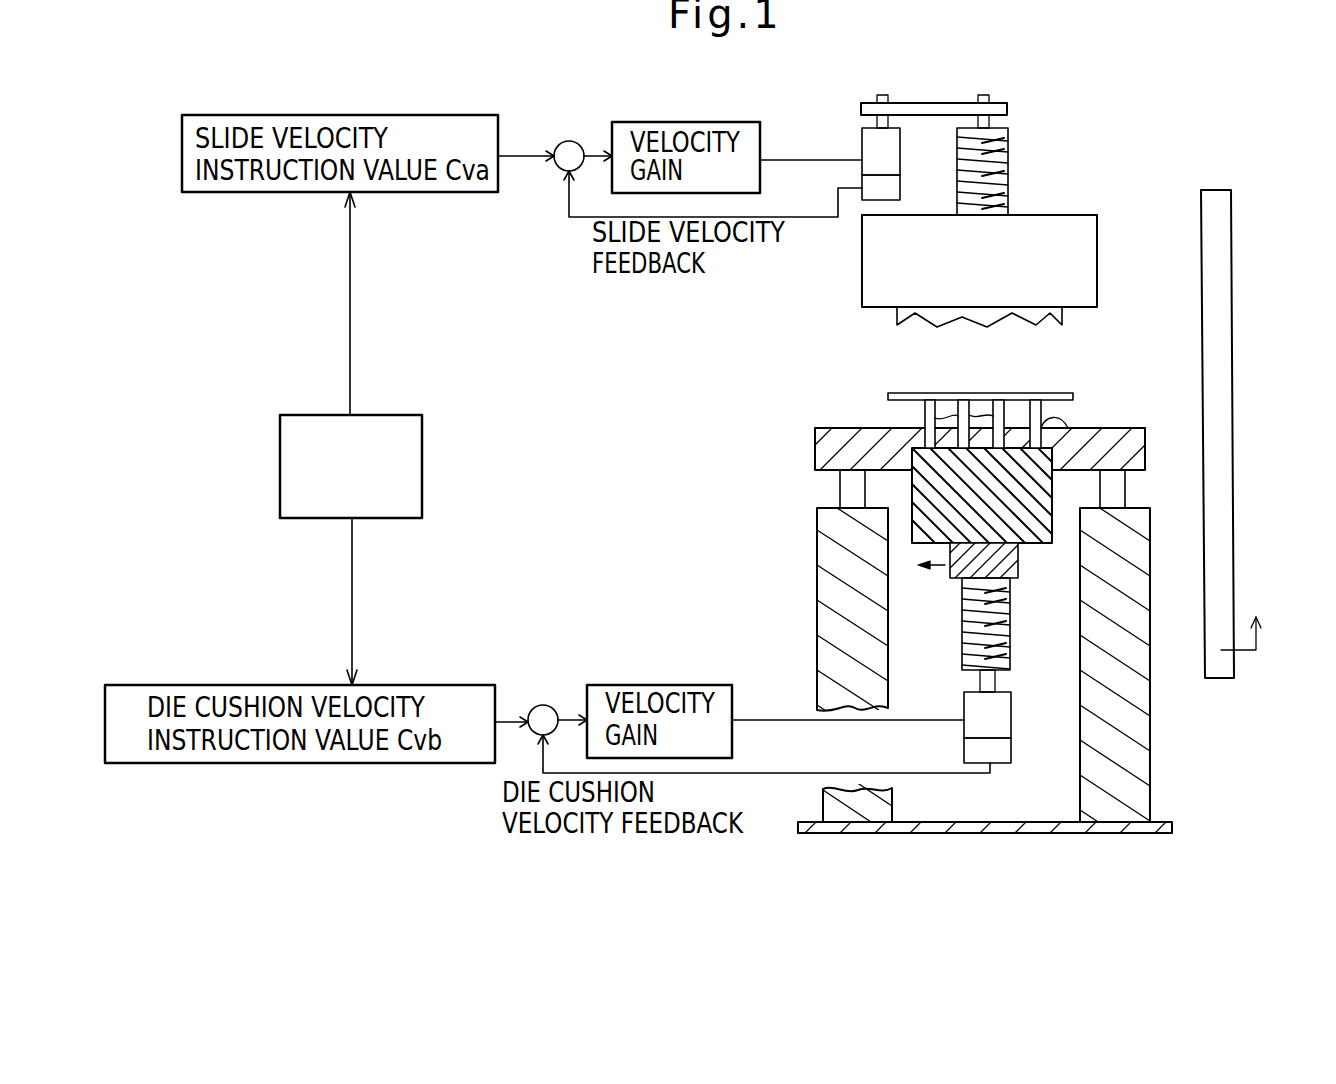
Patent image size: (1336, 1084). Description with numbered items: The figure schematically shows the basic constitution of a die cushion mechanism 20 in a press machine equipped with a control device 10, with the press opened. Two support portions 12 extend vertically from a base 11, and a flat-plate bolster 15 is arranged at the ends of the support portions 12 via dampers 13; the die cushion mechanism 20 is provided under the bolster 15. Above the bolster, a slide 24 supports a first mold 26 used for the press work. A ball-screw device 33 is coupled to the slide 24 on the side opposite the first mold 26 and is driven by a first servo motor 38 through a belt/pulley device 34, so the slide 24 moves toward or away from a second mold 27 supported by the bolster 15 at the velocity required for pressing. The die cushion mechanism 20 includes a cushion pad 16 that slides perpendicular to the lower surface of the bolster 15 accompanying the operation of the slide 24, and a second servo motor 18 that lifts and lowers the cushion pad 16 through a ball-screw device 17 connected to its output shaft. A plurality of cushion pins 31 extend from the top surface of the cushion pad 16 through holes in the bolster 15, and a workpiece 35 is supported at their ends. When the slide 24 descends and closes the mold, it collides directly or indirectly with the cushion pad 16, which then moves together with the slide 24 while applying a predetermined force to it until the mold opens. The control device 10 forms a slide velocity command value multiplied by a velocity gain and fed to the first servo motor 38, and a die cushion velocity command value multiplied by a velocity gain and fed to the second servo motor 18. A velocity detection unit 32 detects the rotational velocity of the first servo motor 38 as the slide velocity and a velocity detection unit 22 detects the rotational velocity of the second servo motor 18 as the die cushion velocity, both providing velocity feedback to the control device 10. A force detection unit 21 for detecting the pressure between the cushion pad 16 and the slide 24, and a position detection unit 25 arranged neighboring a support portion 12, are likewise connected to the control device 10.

The control device 10 is at (423, 468).
The base 11 is at (1160, 822).
The support portion 12 is at (1143, 720).
The damper 13 is at (842, 490).
The bolster 15 is at (1130, 428).
The cushion pad 16 is at (897, 530).
The ball-screw device 17 is at (1010, 640).
The second servo motor 18 is at (1011, 718).
The die cushion mechanism 20 is at (912, 657).
The force detection unit 21 is at (1018, 565).
The velocity detection unit 22 is at (1011, 752).
The slide 24 is at (1085, 247).
The position detection unit 25 is at (1222, 265).
The first mold 26 is at (1063, 316).
The second mold 27 is at (1056, 425).
The cushion pin 31 is at (1035, 400).
The velocity detection unit 32 is at (900, 192).
The ball-screw device 33 is at (1005, 173).
The belt/pulley device 34 is at (924, 104).
The workpiece 35 is at (900, 393).
The first servo motor 38 is at (900, 154).